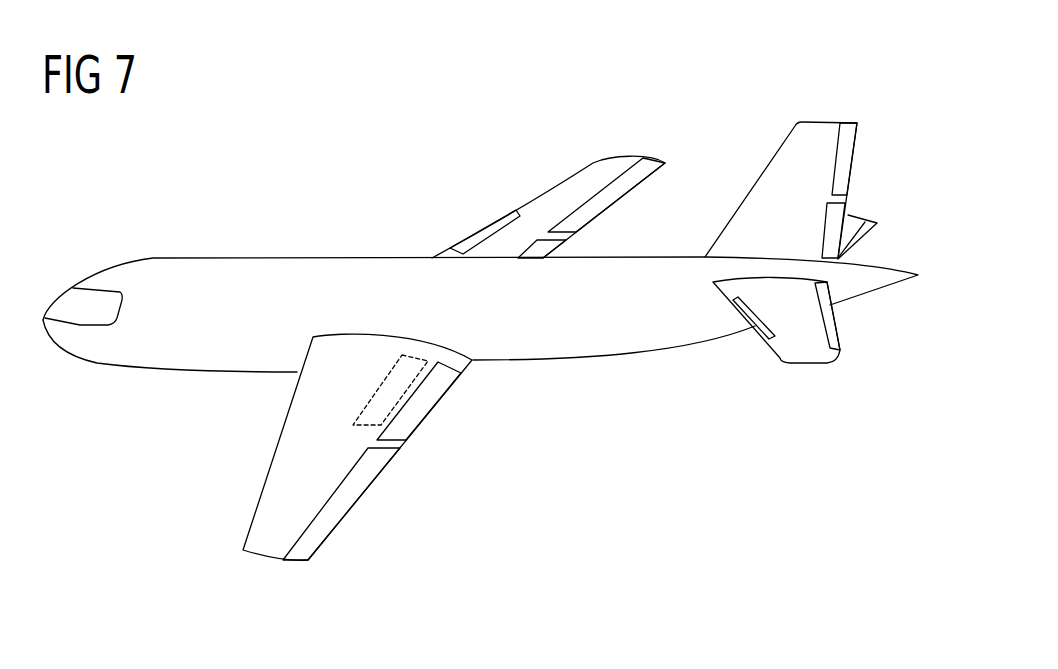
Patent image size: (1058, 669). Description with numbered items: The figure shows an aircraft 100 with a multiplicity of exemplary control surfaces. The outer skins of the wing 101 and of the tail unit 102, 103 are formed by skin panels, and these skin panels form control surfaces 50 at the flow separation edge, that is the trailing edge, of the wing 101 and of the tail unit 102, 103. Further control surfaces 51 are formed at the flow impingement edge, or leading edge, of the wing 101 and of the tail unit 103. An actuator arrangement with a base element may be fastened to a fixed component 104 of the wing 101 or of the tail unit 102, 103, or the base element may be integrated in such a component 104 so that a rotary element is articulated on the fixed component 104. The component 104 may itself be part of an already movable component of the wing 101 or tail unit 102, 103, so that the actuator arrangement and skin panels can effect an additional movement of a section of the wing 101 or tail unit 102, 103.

The aircraft 100 is at (633, 492).
The wing 101 is at (282, 482).
The tail unit 102 is at (818, 133).
The tail unit 103 is at (808, 350).
The fixed component 104 is at (380, 412).
The control surface 50 is at (428, 398).
The control surface 51 is at (487, 225).